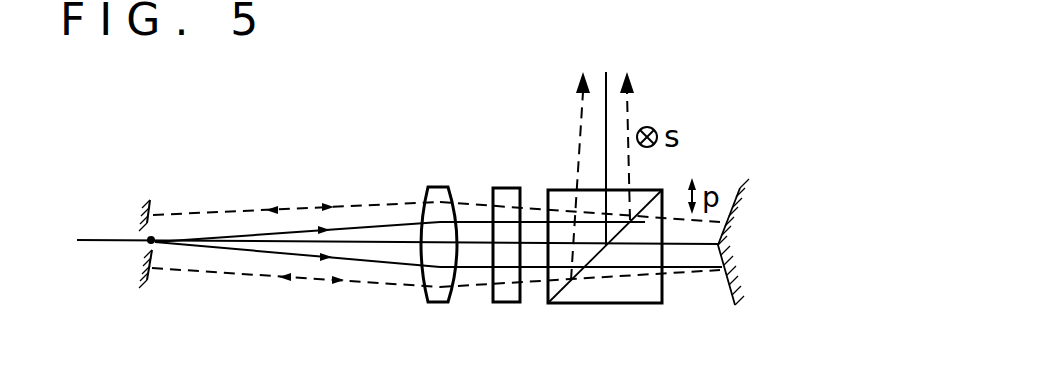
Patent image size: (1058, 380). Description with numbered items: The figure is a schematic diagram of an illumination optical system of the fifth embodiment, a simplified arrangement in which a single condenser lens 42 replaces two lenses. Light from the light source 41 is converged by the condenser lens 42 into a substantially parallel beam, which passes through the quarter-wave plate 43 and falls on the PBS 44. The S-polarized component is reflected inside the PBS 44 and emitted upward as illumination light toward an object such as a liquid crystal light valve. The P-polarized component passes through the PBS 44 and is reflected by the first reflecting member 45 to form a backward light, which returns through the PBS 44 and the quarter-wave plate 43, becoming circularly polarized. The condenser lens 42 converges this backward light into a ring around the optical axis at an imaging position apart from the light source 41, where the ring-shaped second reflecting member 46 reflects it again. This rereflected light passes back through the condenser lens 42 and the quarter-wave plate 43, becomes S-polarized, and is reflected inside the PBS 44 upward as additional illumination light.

The light source 41 is at (157, 245).
The condenser lens 42 is at (432, 302).
The quarter-wave plate 43 is at (502, 303).
The PBS 44 is at (583, 305).
The first reflecting member 45 is at (725, 295).
The second reflecting member 46 is at (146, 268).